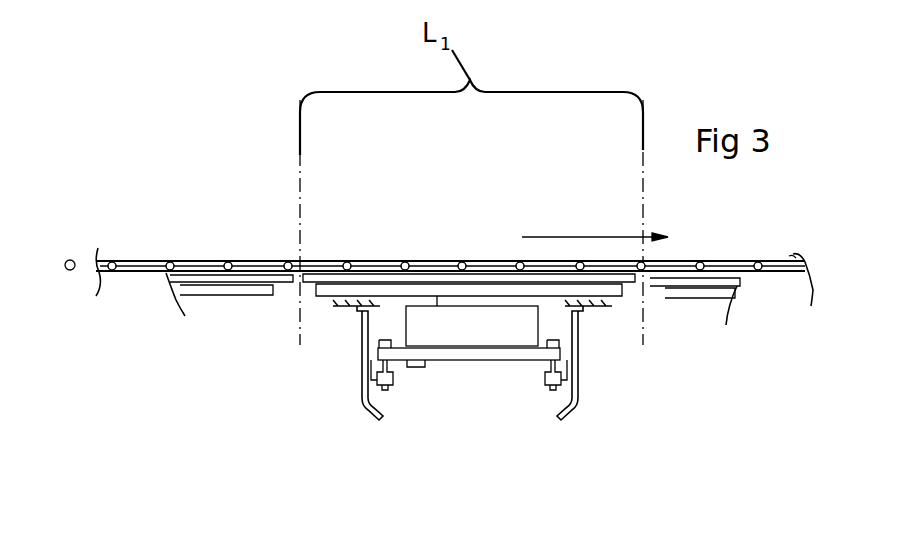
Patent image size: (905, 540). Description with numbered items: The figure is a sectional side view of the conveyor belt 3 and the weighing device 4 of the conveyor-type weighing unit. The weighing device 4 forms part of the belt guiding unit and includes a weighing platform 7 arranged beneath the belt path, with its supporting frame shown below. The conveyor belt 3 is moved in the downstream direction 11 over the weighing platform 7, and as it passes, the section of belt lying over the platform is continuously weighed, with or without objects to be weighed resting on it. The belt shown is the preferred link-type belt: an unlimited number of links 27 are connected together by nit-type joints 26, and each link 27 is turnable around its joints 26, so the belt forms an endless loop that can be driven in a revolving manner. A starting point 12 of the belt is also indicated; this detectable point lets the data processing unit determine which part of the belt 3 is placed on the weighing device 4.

The starting point 12 is at (138, 258).
The nit-type joint 26 is at (172, 260).
The conveyor belt 3 is at (218, 260).
The link 27 is at (318, 262).
The weighing platform 7 is at (410, 262).
The downstream direction 11 is at (570, 232).
The weighing device 4 is at (398, 448).